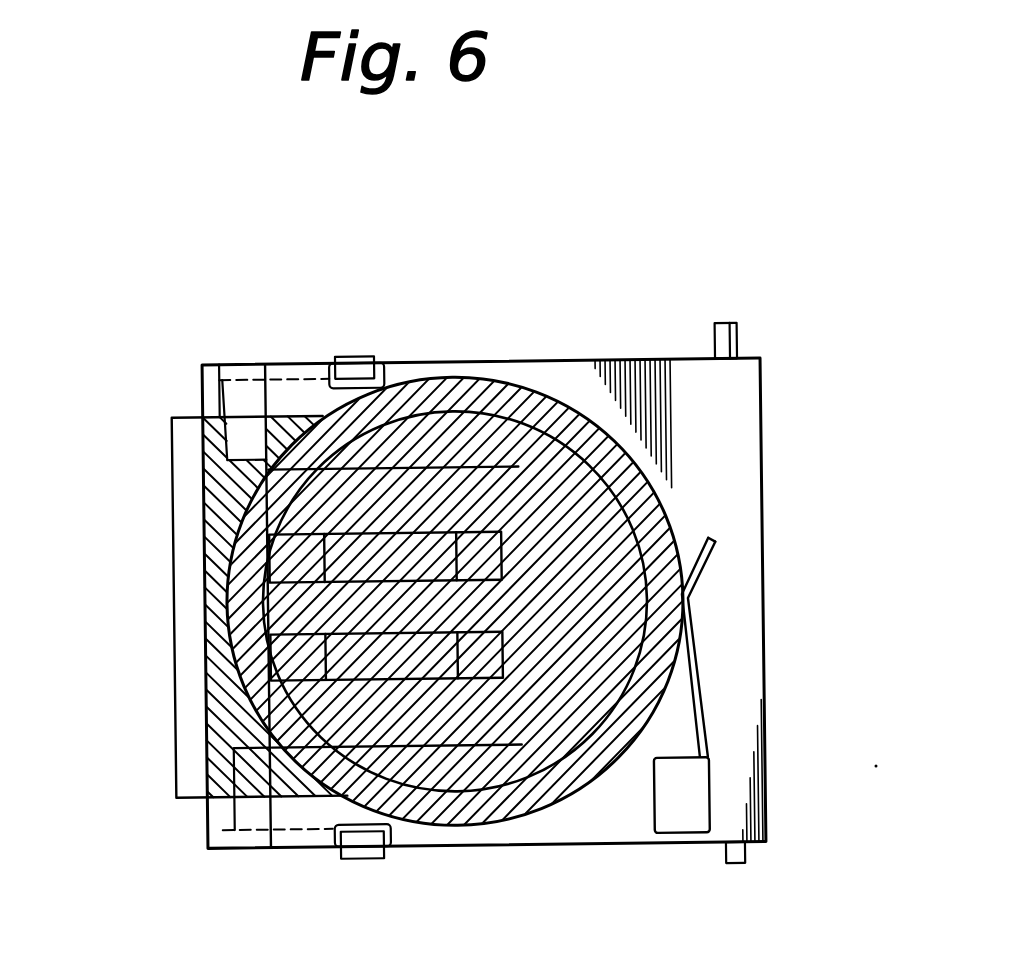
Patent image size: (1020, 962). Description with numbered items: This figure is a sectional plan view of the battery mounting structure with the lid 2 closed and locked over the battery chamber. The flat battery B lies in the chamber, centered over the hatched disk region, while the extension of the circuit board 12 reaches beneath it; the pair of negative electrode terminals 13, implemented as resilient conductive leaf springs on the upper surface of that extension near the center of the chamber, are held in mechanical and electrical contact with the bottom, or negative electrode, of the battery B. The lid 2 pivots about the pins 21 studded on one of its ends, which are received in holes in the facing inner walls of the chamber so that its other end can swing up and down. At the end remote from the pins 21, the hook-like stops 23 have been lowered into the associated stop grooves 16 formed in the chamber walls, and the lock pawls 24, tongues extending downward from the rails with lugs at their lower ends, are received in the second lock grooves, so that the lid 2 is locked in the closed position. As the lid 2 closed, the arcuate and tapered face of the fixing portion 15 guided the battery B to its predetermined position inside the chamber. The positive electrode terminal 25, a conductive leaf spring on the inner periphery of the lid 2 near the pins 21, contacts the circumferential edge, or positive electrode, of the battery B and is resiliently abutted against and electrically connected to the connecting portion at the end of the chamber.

The lid 2 is at (750, 497).
The circuit board 12 is at (500, 463).
The negative electrode terminals 13 is at (480, 660).
The fixing portion 15 is at (217, 483).
The stop grooves 16 is at (258, 812).
The pins 21 is at (742, 330).
The stops 23 is at (247, 780).
The lock pawl 24 is at (356, 352).
The positive electrode terminal 25 is at (703, 680).
The battery B is at (453, 440).